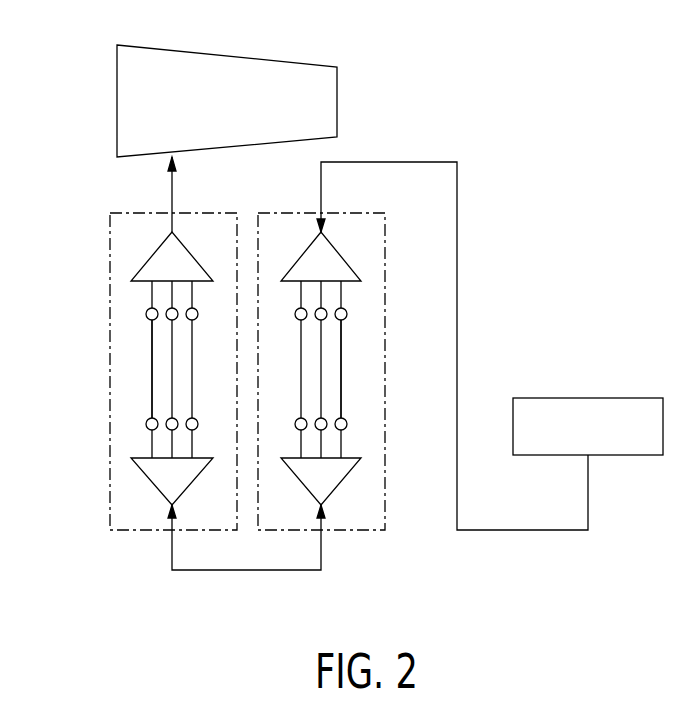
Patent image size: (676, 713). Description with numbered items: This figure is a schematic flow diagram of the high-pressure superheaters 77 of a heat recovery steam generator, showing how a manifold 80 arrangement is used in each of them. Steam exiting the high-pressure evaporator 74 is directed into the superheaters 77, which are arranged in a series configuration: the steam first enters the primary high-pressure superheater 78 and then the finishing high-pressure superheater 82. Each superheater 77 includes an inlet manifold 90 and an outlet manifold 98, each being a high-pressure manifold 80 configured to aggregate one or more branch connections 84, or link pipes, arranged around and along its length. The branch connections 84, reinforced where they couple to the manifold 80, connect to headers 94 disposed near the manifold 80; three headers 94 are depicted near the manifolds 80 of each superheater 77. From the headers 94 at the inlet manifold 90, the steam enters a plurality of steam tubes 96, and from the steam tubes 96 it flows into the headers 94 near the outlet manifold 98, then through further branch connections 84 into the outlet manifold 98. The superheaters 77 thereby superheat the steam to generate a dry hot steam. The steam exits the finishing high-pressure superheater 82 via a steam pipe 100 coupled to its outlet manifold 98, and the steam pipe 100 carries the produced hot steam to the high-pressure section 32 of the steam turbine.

The high-pressure section 32 is at (300, 63).
The high-pressure evaporator 74 is at (588, 398).
The high-pressure superheaters 77 is at (95, 150).
The primary high-pressure superheater 78 is at (268, 212).
The manifold 80 is at (135, 241).
The finishing high-pressure superheater 82 is at (200, 212).
The branch connections 84 is at (150, 298).
The inlet manifold 90 is at (140, 473).
The headers 94 is at (146, 314).
The steam tubes 96 is at (152, 373).
The outlet manifold 98 is at (150, 258).
The steam pipe 100 is at (172, 200).